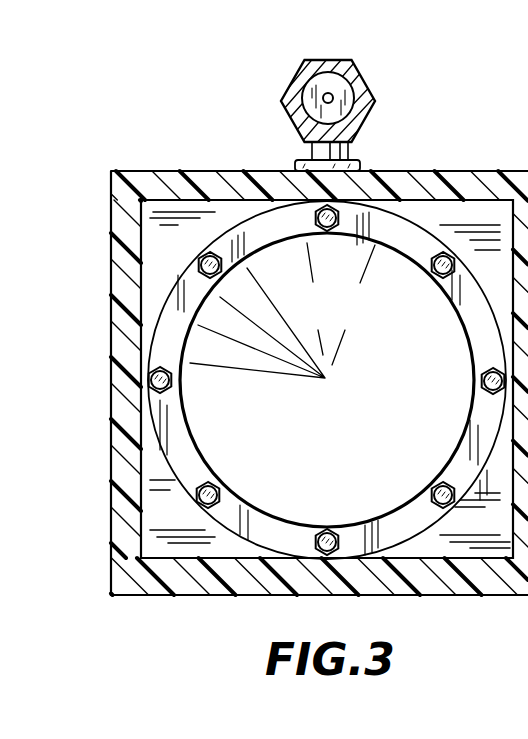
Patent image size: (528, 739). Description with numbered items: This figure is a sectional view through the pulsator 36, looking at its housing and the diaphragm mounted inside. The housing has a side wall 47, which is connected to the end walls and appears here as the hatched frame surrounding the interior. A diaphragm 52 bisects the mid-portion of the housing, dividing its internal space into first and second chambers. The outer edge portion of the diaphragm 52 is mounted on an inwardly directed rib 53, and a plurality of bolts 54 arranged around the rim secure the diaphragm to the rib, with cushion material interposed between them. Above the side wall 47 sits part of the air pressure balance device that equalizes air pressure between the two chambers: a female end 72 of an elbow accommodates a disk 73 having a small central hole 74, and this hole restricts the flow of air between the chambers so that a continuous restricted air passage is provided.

The pulsator 36 is at (458, 95).
The side wall 47 is at (207, 182).
The diaphragm 52 is at (353, 316).
The inwardly directed rib 53 is at (483, 215).
The bolts 54 is at (168, 380).
The female end 72 is at (331, 62).
The disk 73 is at (322, 86).
The small central hole 74 is at (344, 96).